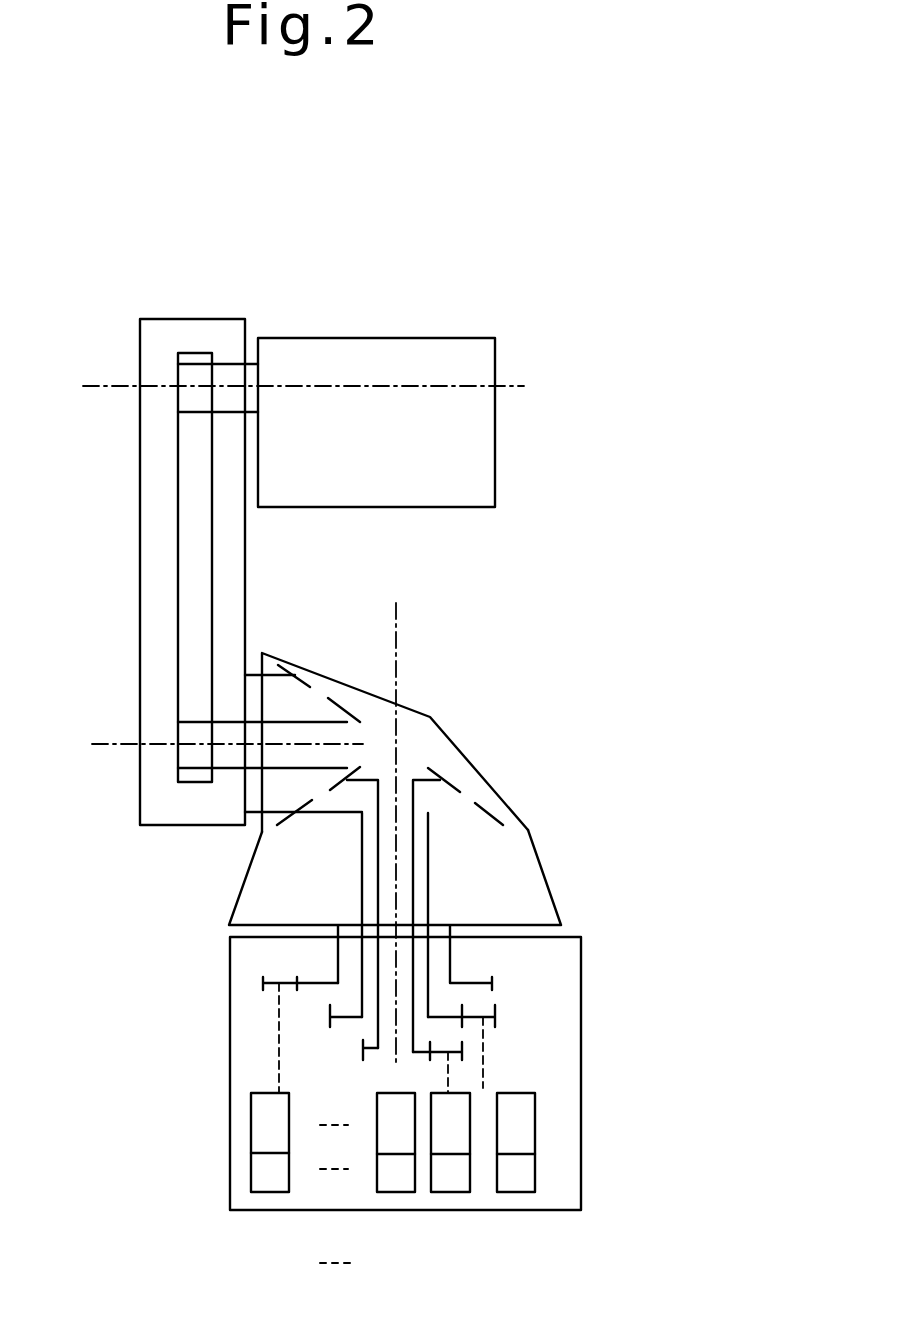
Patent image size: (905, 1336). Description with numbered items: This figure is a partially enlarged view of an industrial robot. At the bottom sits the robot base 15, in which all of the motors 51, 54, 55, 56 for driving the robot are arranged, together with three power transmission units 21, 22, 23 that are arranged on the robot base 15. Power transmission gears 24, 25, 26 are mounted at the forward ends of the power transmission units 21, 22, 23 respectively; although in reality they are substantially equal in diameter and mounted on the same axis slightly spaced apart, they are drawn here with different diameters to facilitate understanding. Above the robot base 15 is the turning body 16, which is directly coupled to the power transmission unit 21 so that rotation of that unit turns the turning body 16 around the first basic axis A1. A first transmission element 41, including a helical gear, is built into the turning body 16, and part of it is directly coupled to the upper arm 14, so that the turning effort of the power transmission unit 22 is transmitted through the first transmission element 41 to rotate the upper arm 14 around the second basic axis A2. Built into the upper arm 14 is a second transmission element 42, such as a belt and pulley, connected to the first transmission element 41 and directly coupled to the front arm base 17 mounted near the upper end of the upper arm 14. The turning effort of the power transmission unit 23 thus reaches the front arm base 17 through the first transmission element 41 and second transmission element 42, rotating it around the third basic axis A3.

The upper arm 14 is at (205, 319).
The robot base 15 is at (580, 1008).
The turning body 16 is at (550, 882).
The front arm base 17 is at (422, 338).
The power transmission unit 21 is at (338, 953).
The power transmission unit 22 is at (427, 972).
The power transmission unit 23 is at (377, 992).
The power transmission gear 24 is at (313, 985).
The power transmission gear 25 is at (347, 1020).
The power transmission gear 26 is at (368, 1058).
The first transmission element 41 is at (423, 757).
The second transmission element 42 is at (172, 552).
The motor 51 is at (270, 1173).
The motor 54 is at (397, 1173).
The motor 55 is at (453, 1173).
The motor 56 is at (518, 1173).
The first basic axis A1 is at (398, 655).
The second basic axis A2 is at (112, 742).
The third basic axis A3 is at (102, 382).